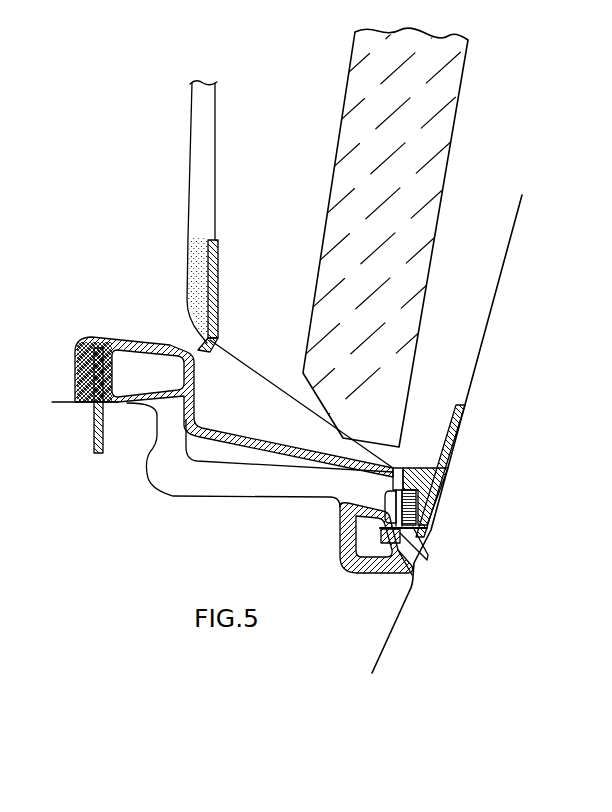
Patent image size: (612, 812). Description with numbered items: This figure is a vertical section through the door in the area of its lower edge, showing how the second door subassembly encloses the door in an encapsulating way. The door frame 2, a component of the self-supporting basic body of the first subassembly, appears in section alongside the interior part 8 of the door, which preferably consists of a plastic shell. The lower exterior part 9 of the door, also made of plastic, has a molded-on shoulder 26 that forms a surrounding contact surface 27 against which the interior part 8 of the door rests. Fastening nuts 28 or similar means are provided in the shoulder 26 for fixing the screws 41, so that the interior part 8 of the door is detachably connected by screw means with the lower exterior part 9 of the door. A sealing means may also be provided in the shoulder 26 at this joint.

The door frame 2 is at (428, 257).
The interior part of the door 8 is at (205, 284).
The lower exterior part of the door 9 is at (464, 420).
The shoulder 26 is at (437, 481).
The contact surface 27 is at (405, 468).
The fastening nuts 28 is at (420, 533).
The screws 41 is at (380, 527).